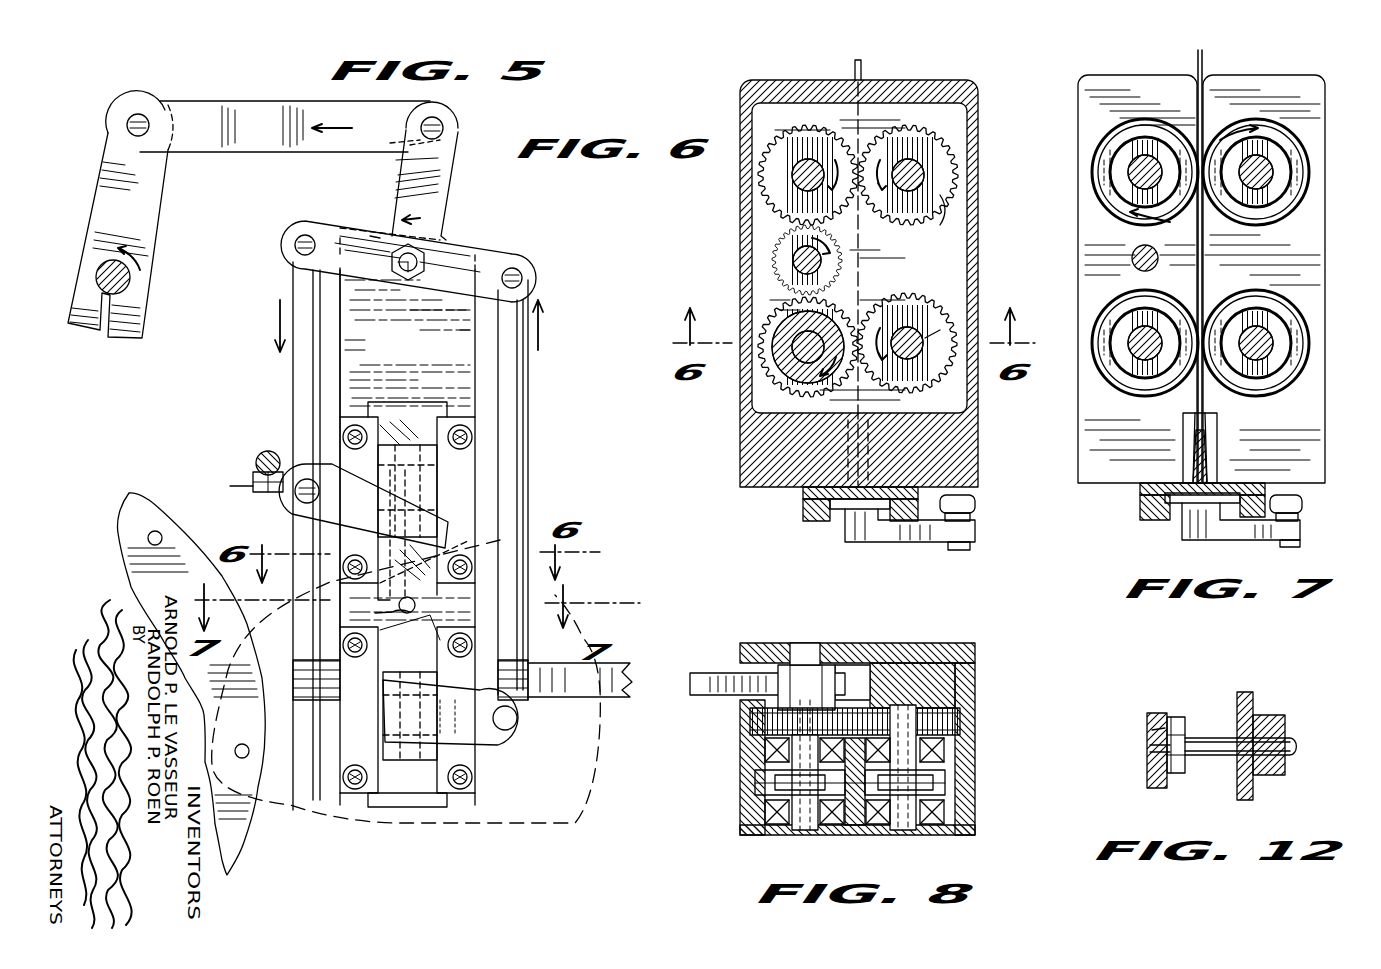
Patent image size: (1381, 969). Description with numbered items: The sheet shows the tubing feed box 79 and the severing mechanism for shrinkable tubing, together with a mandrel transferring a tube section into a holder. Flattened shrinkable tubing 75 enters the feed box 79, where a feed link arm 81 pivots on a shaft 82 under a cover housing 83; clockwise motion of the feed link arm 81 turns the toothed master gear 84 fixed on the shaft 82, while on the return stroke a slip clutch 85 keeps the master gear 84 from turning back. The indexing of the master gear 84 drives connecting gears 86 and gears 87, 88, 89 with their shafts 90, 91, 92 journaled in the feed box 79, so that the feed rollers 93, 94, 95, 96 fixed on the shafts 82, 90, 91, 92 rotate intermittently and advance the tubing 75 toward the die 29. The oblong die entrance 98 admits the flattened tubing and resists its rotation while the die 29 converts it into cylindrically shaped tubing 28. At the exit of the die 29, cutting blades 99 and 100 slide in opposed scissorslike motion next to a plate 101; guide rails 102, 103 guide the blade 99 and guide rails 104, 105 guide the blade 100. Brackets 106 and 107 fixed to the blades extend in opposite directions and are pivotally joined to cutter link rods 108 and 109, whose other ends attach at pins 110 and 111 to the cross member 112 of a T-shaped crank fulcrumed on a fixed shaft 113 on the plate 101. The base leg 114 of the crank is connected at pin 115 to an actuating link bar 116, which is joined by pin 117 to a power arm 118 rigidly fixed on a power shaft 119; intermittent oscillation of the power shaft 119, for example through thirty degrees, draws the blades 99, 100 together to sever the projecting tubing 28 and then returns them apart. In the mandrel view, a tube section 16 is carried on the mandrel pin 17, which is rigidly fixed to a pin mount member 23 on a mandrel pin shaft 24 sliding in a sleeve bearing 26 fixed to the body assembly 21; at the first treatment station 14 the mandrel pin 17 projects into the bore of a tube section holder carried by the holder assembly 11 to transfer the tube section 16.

In FIG. 5, the holder assembly 11 is at (128, 500).
In FIG. 12, the holder assembly 11 is at (1147, 780).
In FIG. 12, the first treatment station 14 is at (1152, 727).
In FIG. 12, the tube section 16 is at (1150, 752).
In FIG. 12, the mandrel pin 17 is at (1150, 745).
In FIG. 5, the body assembly 21 is at (590, 826).
In FIG. 12, the body assembly 21 is at (1245, 800).
In FIG. 12, the pin mount member 23 is at (1185, 728).
In FIG. 12, the mandrel pin shaft 24 is at (1225, 760).
In FIG. 12, the sleeve bearing 26 is at (1272, 725).
In FIG. 5, the shrinkable tubing 28 is at (392, 612).
In FIG. 7, the die 29 is at (1212, 447).
In FIG. 6, the shrinkable tubing 75 is at (862, 70).
In FIG. 7, the shrinkable tubing 75 is at (1204, 63).
In FIG. 6, the feed box 79 is at (730, 464).
In FIG. 7, the feed box 79 is at (1332, 441).
In FIG. 8, the feed box 79 is at (736, 849).
In FIG. 5, the feed link arm 81 is at (240, 484).
In FIG. 8, the feed link arm 81 is at (722, 697).
In FIG. 6, the shaft 82 is at (802, 342).
In FIG. 7, the shaft 82 is at (1138, 335).
In FIG. 8, the shaft 82 is at (812, 645).
In FIG. 8, the cover housing 83 is at (935, 643).
In FIG. 6, the toothed master gear 84 is at (778, 368).
In FIG. 8, the toothed master gear 84 is at (750, 725).
In FIG. 6, the slip clutch 85 is at (785, 348).
In FIG. 8, the slip clutch 85 is at (793, 700).
In FIG. 6, the connecting gears 86 is at (792, 260).
In FIG. 6, the gear 87 is at (802, 150).
In FIG. 6, the gear 88 is at (942, 220).
In FIG. 6, the gear 89 is at (928, 338).
In FIG. 6, the shaft 90 is at (795, 180).
In FIG. 7, the shaft 90 is at (1138, 165).
In FIG. 6, the shaft 91 is at (915, 162).
In FIG. 7, the shaft 91 is at (1265, 167).
In FIG. 6, the shaft 92 is at (935, 313).
In FIG. 7, the shaft 92 is at (1265, 338).
In FIG. 8, the shaft 92 is at (905, 830).
In FIG. 7, the feed roller 93 is at (1100, 372).
In FIG. 8, the feed roller 93 is at (755, 797).
In FIG. 7, the feed roller 94 is at (1103, 175).
In FIG. 7, the feed roller 95 is at (1295, 195).
In FIG. 7, the feed roller 96 is at (1292, 362).
In FIG. 8, the feed roller 96 is at (950, 775).
In FIG. 7, the die entrance 98 is at (1218, 420).
In FIG. 5, the cutting blade 99 is at (420, 556).
In FIG. 5, the cutting blade 100 is at (428, 667).
In FIG. 5, the plate 101 is at (400, 347).
In FIG. 5, the guide rail 102 is at (360, 418).
In FIG. 5, the guide rail 103 is at (463, 418).
In FIG. 5, the guide rail 104 is at (353, 795).
In FIG. 5, the guide rail 105 is at (465, 795).
In FIG. 5, the cutter bracket 106 is at (412, 470).
In FIG. 5, the cutter bracket 107 is at (492, 742).
In FIG. 6, the cutter bracket 107 is at (875, 538).
In FIG. 7, the cutter bracket 107 is at (1218, 533).
In FIG. 5, the cutter link rod 108 is at (310, 344).
In FIG. 5, the cutter link rod 109 is at (520, 418).
In FIG. 5, the pin 110 is at (296, 250).
In FIG. 5, the pin 111 is at (526, 276).
In FIG. 5, the cross member 112 is at (372, 234).
In FIG. 5, the fixed shaft 113 is at (420, 258).
In FIG. 5, the actuating base leg 114 is at (448, 180).
In FIG. 5, the pin 115 is at (440, 122).
In FIG. 5, the actuating link bar 116 is at (270, 152).
In FIG. 5, the pin 117 is at (128, 120).
In FIG. 5, the power arm 118 is at (150, 214).
In FIG. 5, the power shaft 119 is at (130, 283).